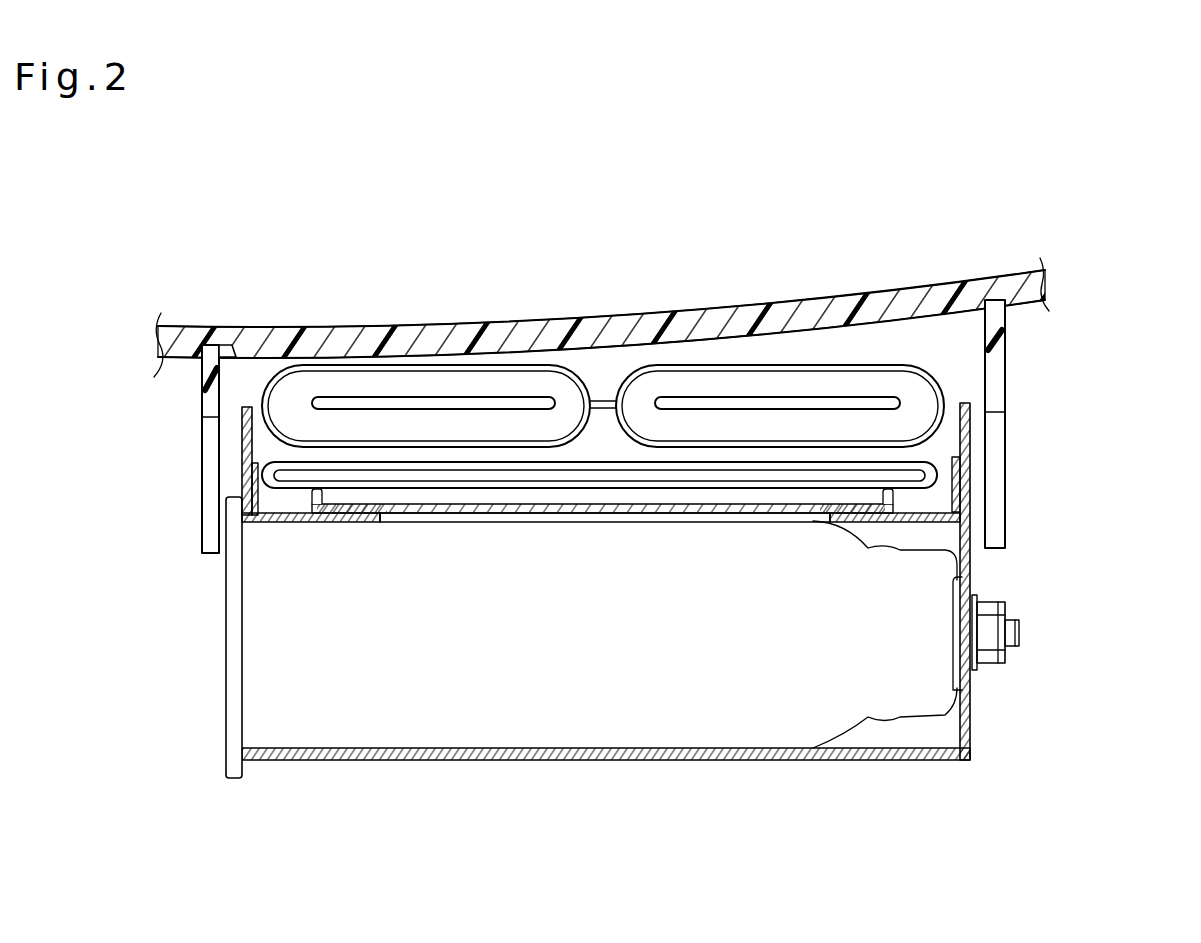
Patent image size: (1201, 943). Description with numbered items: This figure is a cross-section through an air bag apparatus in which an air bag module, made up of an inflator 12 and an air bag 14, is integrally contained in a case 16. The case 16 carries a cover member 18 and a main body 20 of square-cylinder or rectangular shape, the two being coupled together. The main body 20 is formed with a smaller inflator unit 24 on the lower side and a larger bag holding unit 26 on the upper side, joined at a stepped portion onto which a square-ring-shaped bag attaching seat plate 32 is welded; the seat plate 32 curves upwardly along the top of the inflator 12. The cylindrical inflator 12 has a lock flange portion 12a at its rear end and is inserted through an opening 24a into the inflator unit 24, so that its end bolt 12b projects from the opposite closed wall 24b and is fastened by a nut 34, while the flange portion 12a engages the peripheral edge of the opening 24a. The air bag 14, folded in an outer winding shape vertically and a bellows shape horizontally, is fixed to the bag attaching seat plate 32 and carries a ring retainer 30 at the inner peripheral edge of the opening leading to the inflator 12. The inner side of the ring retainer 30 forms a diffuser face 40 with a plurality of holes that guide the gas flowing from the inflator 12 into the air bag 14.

The inflator 12 is at (625, 656).
The lock flange portion 12a is at (232, 755).
The end bolt 12b is at (1081, 616).
The air bag 14 is at (788, 365).
The case 16 is at (972, 687).
The cover member 18 is at (517, 322).
The main body 20 is at (970, 560).
The inflator unit 24 is at (605, 655).
The opening 24a is at (253, 749).
The closed wall 24b is at (973, 724).
The bag holding unit 26 is at (617, 472).
The ring retainer 30 is at (347, 509).
The bag attaching seat plate 32 is at (275, 524).
The nut 34 is at (988, 608).
The diffuser face 40 is at (760, 504).